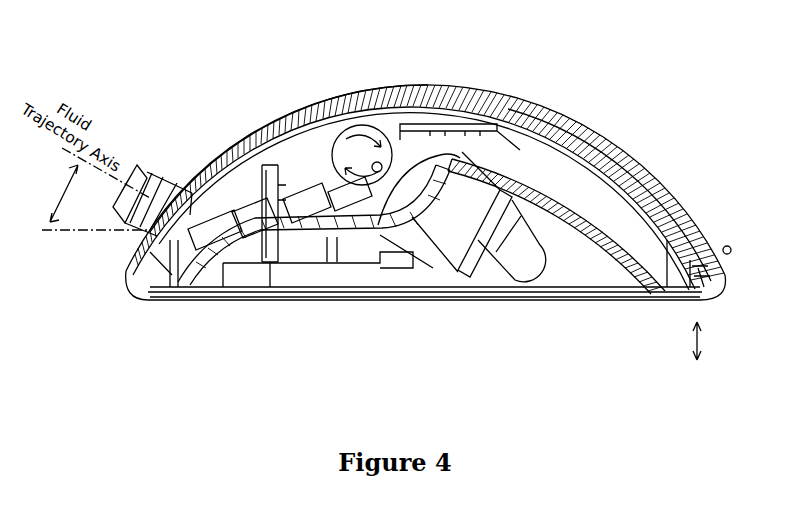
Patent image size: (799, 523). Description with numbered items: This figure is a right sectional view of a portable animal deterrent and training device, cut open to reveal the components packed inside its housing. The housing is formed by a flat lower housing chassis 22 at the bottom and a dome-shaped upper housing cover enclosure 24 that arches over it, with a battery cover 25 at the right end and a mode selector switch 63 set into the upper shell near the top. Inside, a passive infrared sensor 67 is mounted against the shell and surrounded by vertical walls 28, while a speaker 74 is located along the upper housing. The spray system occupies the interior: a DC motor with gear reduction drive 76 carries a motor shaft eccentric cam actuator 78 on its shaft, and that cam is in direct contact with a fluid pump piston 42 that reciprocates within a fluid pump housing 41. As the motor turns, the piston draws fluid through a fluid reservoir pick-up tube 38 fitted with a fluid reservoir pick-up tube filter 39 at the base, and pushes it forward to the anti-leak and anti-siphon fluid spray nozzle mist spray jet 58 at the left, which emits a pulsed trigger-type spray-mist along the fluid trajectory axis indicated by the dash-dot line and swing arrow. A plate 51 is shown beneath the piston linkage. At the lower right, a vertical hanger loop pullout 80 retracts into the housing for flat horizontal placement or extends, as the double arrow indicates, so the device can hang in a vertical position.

The lower housing chassis 22 is at (610, 262).
The upper housing cover enclosure 24 is at (417, 86).
The battery cover 25 is at (729, 246).
The vertical walls 28 is at (217, 170).
The fluid reservoir pick-up tube 38 is at (432, 275).
The fluid reservoir pick-up tube filter 39 is at (237, 297).
The fluid pump housing 41 is at (457, 222).
The fluid pump piston 42 is at (345, 205).
The nozzle arm segment 51 is at (312, 238).
The fluid spray nozzle mist spray jet 58 is at (147, 167).
The mode selector switch 63 is at (488, 80).
The passive infrared sensor 67 is at (253, 140).
The speaker 74 is at (293, 113).
The DC motor with gear reduction drive 76 is at (388, 128).
The motor shaft eccentric cam actuator 78 is at (360, 133).
The vertical hanger loop pullout 80 is at (698, 300).